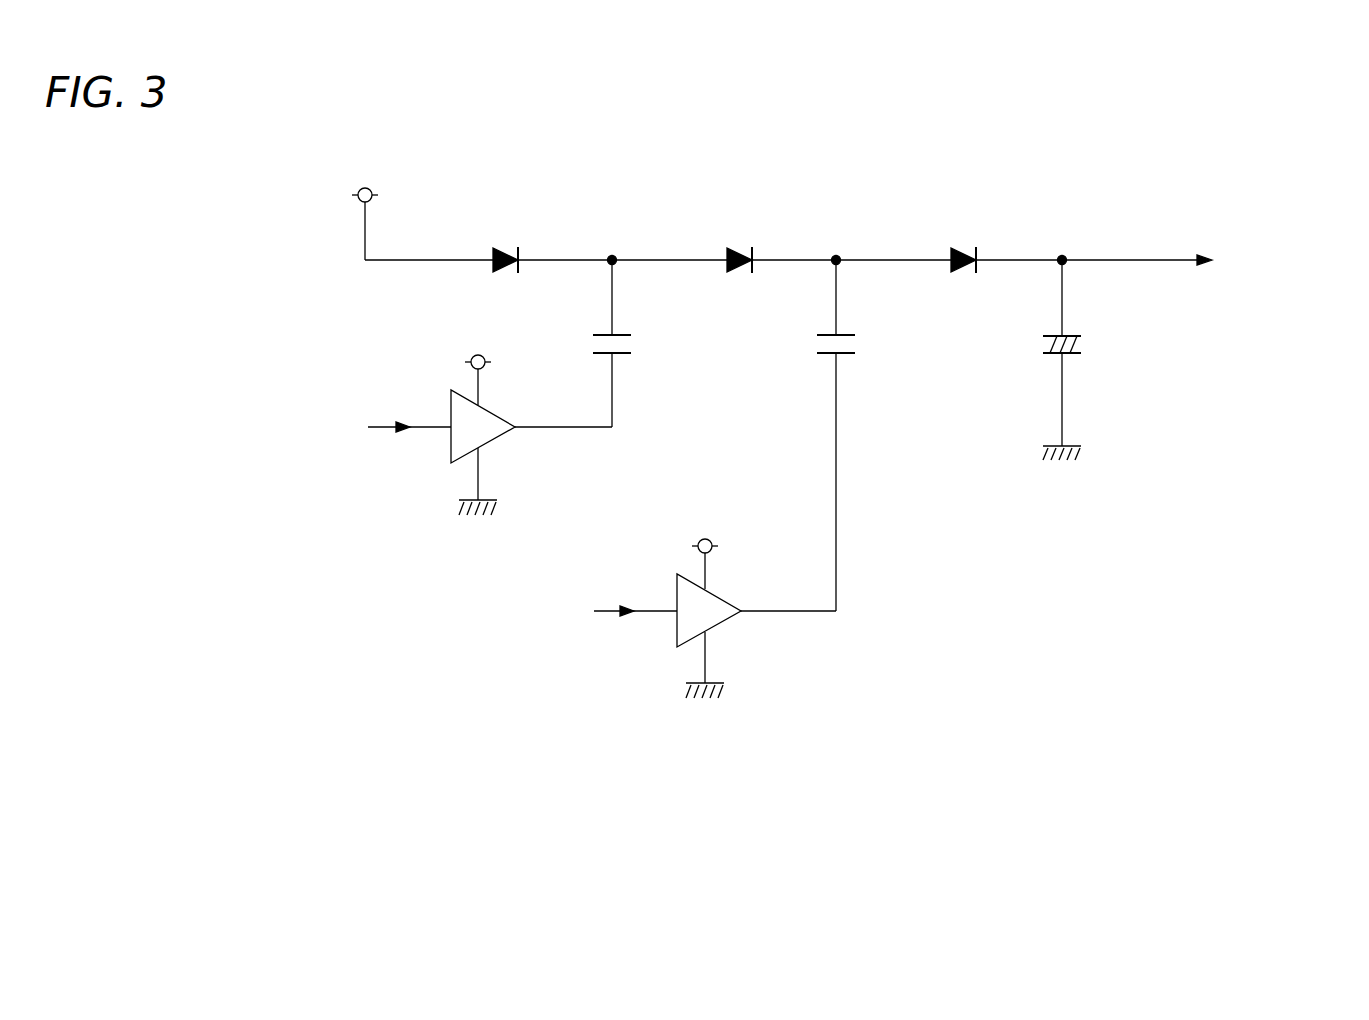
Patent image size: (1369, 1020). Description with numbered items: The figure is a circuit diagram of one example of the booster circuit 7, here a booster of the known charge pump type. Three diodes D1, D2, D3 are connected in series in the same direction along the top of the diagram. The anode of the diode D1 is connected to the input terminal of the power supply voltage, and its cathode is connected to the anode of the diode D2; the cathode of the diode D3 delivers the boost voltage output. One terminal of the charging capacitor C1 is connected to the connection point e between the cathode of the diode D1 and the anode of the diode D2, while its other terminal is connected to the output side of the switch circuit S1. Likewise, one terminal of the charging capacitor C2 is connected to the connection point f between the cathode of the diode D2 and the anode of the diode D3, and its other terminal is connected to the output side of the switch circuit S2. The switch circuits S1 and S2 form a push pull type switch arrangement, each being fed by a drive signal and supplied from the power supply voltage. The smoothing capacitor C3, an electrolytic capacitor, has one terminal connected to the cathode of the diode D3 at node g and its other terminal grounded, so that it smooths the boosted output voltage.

The booster circuit 7 is at (1010, 576).
The diode D1 is at (506, 245).
The diode D2 is at (740, 245).
The diode D3 is at (961, 245).
The charging capacitor C1 is at (629, 343).
The charging capacitor C2 is at (853, 435).
The smoothing capacitor C3 is at (1079, 360).
The switch circuit S1 is at (401, 423).
The switch circuit S2 is at (619, 607).
The connection point e is at (612, 247).
The connection point f is at (836, 247).
The node g is at (1062, 247).